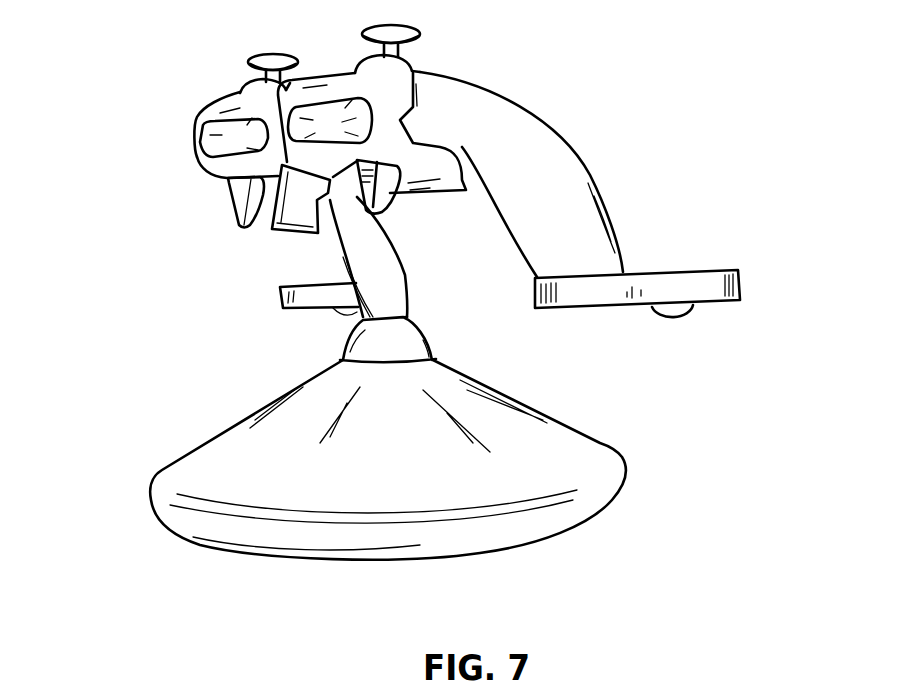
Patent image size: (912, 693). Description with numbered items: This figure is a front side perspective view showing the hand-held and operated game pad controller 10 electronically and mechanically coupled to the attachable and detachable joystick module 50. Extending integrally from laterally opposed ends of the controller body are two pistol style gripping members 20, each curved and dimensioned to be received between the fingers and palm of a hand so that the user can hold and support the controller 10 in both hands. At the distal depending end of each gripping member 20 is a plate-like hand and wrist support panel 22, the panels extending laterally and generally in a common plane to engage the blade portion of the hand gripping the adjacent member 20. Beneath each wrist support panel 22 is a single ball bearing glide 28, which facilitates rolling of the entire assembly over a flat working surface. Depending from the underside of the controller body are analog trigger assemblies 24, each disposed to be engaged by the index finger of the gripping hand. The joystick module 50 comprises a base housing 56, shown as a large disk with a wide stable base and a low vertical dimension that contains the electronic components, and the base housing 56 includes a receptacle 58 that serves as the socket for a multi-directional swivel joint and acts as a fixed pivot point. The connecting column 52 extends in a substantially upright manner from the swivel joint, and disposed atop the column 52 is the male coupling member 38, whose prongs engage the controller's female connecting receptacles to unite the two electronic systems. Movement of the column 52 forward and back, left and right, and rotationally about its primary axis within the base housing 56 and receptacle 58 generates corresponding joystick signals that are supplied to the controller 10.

The hand-held and operated game pad controller 10 is at (183, 107).
The pistol style gripping member 20 is at (542, 152).
The hand and wrist support panel 22 is at (713, 268).
The analog trigger assembly 24 is at (237, 203).
The ball bearing glide 28 is at (680, 315).
The male coupling member 38 is at (290, 162).
The joystick module 50 is at (220, 409).
The connecting column 52 is at (343, 242).
The base housing 56 is at (190, 483).
The receptacle 58 is at (367, 352).